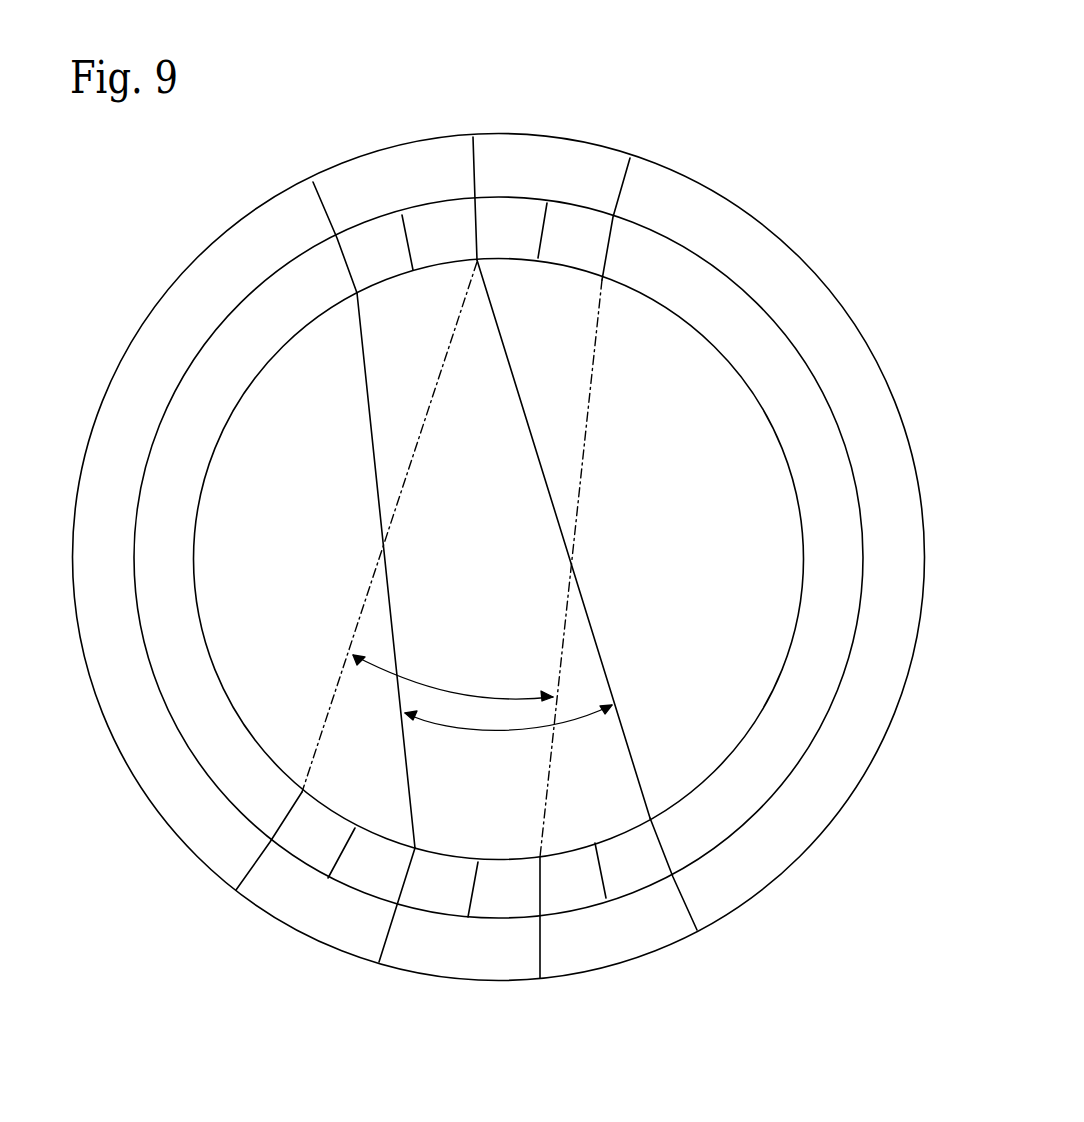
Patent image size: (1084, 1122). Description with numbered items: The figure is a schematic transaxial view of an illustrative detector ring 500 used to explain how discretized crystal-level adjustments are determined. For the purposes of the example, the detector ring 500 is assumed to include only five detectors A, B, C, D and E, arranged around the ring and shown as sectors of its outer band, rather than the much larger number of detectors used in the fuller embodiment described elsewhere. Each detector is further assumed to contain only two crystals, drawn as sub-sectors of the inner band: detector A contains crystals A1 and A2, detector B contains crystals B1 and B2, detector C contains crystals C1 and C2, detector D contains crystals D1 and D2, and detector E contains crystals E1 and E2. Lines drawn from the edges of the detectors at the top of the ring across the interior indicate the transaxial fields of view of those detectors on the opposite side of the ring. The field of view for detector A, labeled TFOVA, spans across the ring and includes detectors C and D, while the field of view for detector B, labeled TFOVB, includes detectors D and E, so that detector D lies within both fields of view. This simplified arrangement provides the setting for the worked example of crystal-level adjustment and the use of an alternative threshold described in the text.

The detector ring 500 is at (499, 543).
The detector A is at (355, 235).
The detector B is at (515, 198).
The detector C is at (615, 931).
The detector D is at (501, 917).
The detector E is at (281, 852).
The crystal A1 is at (389, 243).
The crystal A2 is at (446, 239).
The crystal B1 is at (525, 230).
The crystal B2 is at (597, 219).
The crystal C1 is at (586, 873).
The crystal C2 is at (659, 874).
The crystal D1 is at (455, 889).
The crystal D2 is at (508, 891).
The crystal E1 is at (328, 850).
The crystal E2 is at (388, 905).
The field of view for detector A TFOVA is at (508, 732).
The field of view for detector B TFOVB is at (453, 678).